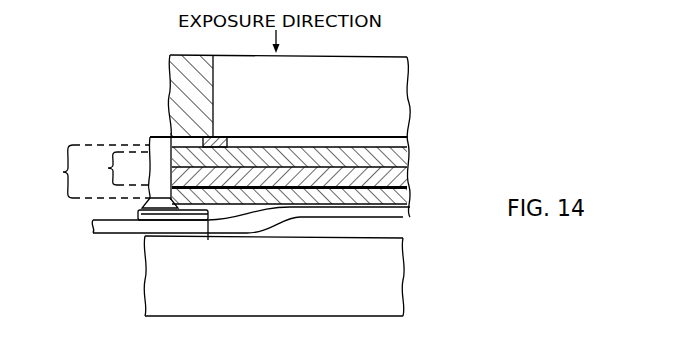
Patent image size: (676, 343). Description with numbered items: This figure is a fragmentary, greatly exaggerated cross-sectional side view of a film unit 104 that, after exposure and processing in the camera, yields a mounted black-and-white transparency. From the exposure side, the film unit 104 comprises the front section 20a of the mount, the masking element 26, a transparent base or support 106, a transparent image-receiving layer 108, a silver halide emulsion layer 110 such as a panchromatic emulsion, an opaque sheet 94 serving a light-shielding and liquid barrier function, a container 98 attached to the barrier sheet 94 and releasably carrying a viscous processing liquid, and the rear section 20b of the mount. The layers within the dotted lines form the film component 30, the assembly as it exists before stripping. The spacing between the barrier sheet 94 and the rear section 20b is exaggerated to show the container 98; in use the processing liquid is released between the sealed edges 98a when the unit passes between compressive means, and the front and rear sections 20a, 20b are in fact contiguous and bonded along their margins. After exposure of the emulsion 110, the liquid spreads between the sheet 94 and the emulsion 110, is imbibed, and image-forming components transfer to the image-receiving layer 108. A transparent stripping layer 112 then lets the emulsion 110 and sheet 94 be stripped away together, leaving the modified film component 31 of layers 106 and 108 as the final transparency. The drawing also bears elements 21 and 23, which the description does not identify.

The film unit 104 is at (116, 96).
The front section of the mount 20a is at (225, 106).
The rear section of the mount 20b is at (403, 287).
The side wall member 21 is at (152, 140).
The contact surface 23 is at (334, 142).
The masking element 26 is at (408, 143).
The film component 30 is at (91, 171).
The modified film component 31 is at (116, 168).
The opaque sheet 94 is at (405, 217).
The container 98 is at (140, 207).
The sealed edges 98a is at (212, 221).
The transparent base 106 is at (406, 161).
The transparent image-receiving layer 108 is at (406, 180).
The silver halide emulsion layer 110 is at (405, 196).
The stripping layer 112 is at (410, 190).